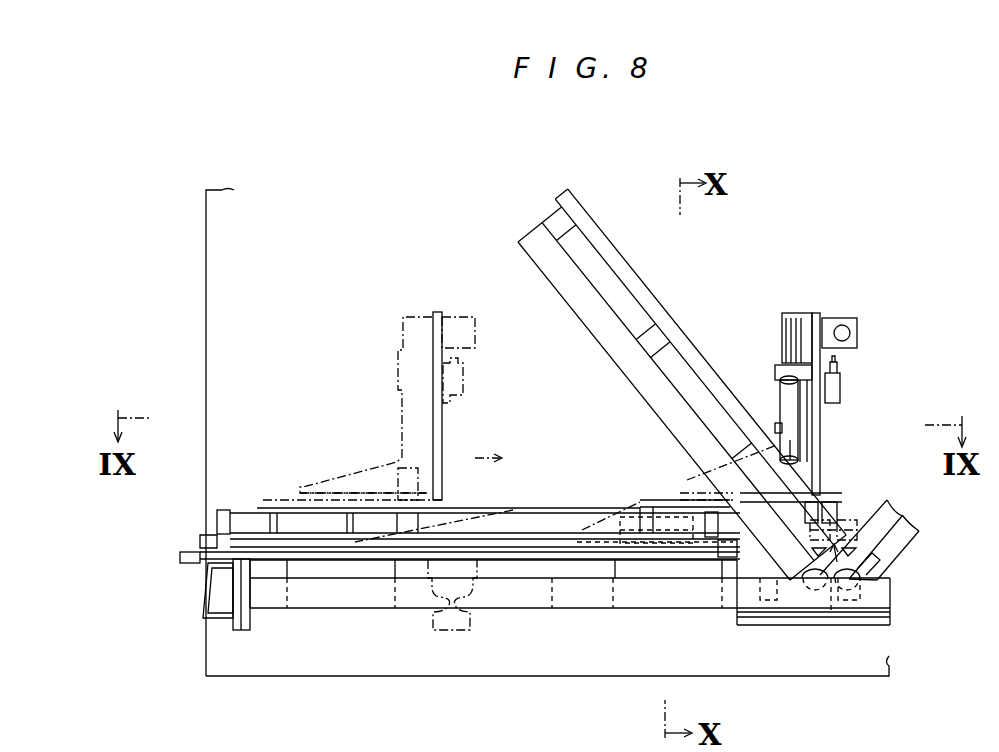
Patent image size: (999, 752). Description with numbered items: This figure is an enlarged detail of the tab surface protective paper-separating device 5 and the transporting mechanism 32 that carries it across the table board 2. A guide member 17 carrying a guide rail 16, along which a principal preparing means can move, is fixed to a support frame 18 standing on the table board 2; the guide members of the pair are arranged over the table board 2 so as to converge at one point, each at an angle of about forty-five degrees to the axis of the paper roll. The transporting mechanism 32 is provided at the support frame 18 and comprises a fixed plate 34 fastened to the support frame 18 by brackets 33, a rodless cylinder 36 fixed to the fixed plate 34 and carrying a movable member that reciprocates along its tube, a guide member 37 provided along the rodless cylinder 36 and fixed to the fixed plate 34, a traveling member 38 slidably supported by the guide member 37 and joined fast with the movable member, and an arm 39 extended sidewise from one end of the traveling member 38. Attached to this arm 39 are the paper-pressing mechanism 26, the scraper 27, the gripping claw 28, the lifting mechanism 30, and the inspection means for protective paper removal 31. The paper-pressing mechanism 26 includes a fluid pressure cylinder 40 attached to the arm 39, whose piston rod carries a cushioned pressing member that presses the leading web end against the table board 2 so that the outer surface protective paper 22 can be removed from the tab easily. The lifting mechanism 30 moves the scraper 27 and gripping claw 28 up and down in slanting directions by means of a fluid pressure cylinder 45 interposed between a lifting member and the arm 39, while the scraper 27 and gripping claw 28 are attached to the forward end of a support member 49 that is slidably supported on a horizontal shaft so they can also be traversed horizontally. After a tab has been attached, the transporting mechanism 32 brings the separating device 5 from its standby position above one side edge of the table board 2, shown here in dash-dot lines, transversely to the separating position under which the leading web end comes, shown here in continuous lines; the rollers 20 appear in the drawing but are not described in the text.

The table board 2 is at (237, 362).
The separating device 5 is at (425, 305).
The guide rail 16 is at (647, 307).
The guide member 17 is at (576, 316).
The support frame 18 is at (215, 632).
The roller 20 is at (830, 590).
The outer surface protective paper 22 is at (447, 632).
The paper-pressing mechanism 26 is at (844, 325).
The scraper 27 is at (480, 590).
The gripping claw 28 is at (892, 560).
The lifting mechanism 30 is at (775, 404).
The inspection means for protective paper removal 31 is at (843, 388).
The transporting mechanism 32 is at (600, 497).
The bracket 33 is at (345, 568).
The fixed plate 34 is at (565, 595).
The rodless cylinder 36 is at (550, 523).
The guide member 37 is at (508, 553).
The traveling member 38 is at (302, 484).
The arm 39 is at (441, 437).
The fluid pressure cylinder 40 is at (858, 333).
The fluid pressure cylinder 45 is at (791, 441).
The support member 49 is at (436, 525).